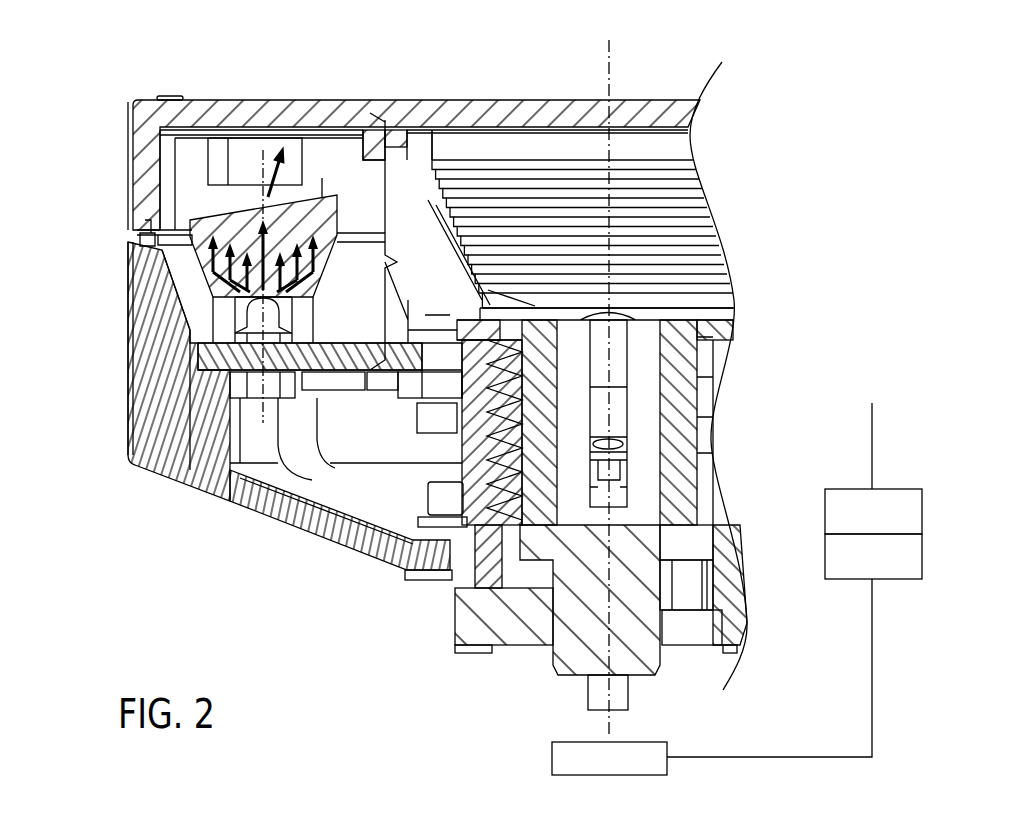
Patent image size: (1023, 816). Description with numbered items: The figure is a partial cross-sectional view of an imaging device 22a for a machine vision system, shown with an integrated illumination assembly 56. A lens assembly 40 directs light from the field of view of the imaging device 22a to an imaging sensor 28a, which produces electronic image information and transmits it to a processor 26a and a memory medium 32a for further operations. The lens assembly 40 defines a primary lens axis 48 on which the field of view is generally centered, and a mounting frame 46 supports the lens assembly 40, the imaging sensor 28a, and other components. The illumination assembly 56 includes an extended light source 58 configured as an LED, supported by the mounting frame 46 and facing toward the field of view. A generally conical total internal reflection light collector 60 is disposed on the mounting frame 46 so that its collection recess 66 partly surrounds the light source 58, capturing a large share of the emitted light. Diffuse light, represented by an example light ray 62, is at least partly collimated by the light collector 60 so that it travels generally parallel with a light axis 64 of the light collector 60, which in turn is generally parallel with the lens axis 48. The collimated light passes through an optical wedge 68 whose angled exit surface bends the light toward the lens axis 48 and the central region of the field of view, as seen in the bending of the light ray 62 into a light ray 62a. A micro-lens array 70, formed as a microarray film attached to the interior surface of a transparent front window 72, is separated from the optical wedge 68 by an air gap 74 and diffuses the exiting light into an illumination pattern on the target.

The imaging device 22a is at (118, 120).
The micro-lens array 70 is at (200, 133).
The transparent front window 72 is at (255, 100).
The light ray 62a is at (273, 178).
The optical wedge 68 is at (345, 125).
The primary lens axis 48 is at (612, 78).
The air gap 74 is at (232, 192).
The light ray 62 is at (260, 243).
The light collector 60 is at (200, 260).
The light axis 64 is at (237, 293).
The collection recess 66 is at (232, 320).
The light source 58 is at (253, 333).
The mounting frame 46 is at (307, 462).
The lens assembly 40 is at (648, 314).
The illumination assembly 56 is at (552, 245).
The memory medium 32a is at (922, 508).
The processor 26a is at (922, 557).
The imaging sensor 28a is at (552, 760).